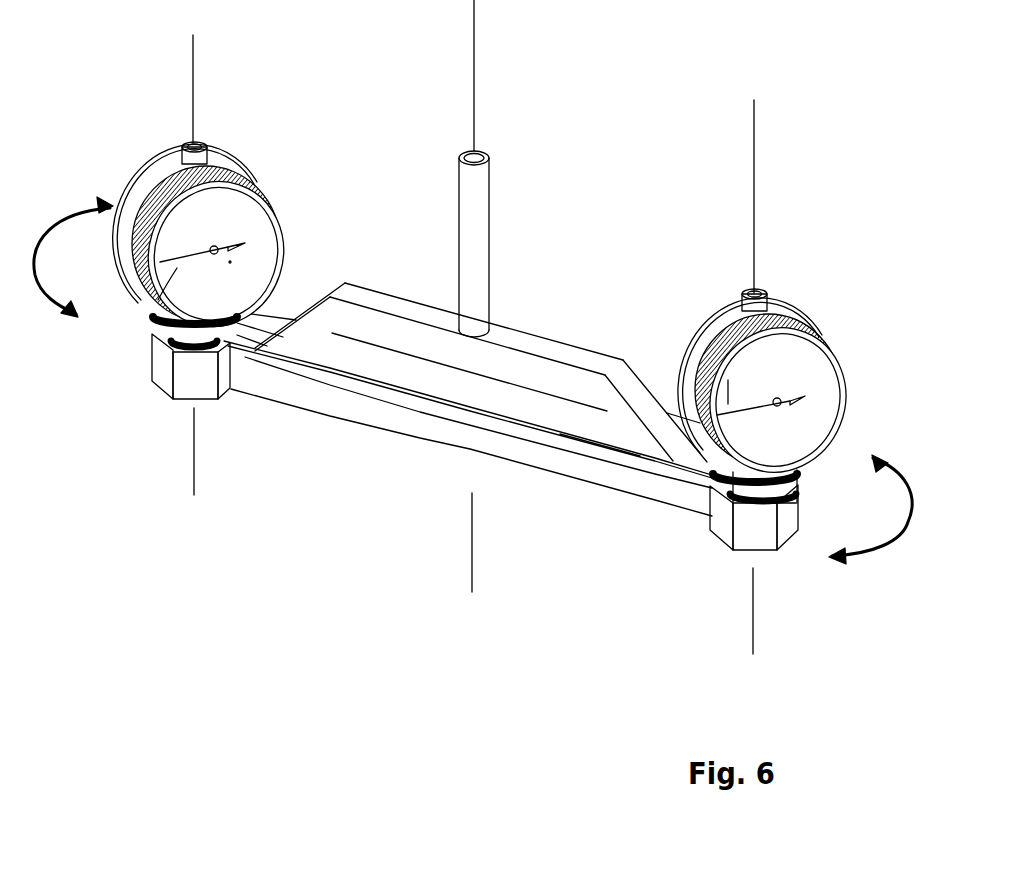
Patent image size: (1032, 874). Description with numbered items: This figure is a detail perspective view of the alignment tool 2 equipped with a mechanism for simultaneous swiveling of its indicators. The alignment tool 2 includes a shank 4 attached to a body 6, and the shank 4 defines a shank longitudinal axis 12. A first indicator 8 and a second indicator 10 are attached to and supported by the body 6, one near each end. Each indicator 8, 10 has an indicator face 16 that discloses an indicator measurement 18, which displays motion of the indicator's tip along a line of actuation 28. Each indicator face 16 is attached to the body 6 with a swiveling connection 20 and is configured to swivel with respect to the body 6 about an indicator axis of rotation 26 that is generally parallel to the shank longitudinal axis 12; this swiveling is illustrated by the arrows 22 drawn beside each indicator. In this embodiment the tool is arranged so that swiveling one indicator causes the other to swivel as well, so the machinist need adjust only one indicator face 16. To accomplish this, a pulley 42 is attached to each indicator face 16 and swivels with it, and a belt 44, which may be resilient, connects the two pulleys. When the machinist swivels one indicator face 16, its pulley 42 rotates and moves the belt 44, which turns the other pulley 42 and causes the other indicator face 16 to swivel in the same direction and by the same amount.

The alignment tool 2 is at (474, 327).
The shank 4 is at (489, 232).
The body 6 is at (342, 417).
The first indicator 8 is at (262, 183).
The second indicator 10 is at (813, 315).
The shank longitudinal axis 12 is at (478, 56).
The indicator face 16 is at (270, 215).
The indicator measurement 18 is at (177, 268).
The swiveling connection 20 is at (176, 355).
The arrows 22 is at (48, 222).
The indicator axis of rotation 26 is at (193, 58).
The line of actuation 28 is at (189, 470).
The pulley 42 is at (707, 485).
The belt 44 is at (598, 453).